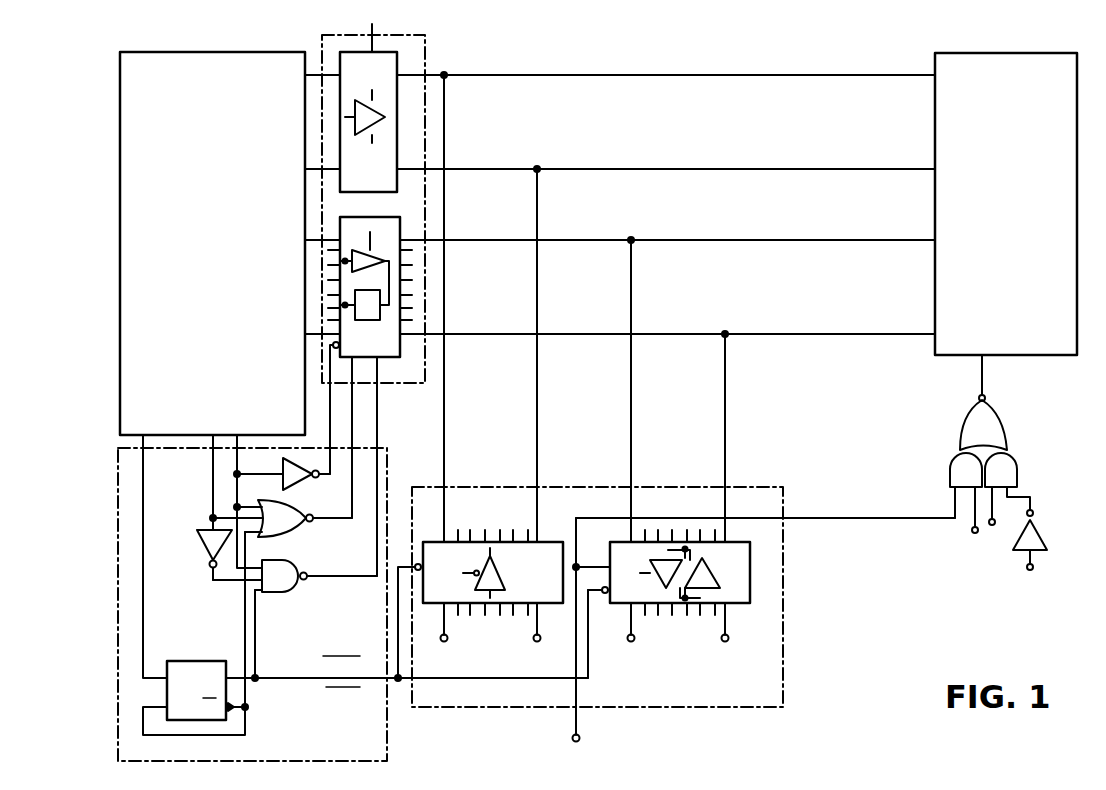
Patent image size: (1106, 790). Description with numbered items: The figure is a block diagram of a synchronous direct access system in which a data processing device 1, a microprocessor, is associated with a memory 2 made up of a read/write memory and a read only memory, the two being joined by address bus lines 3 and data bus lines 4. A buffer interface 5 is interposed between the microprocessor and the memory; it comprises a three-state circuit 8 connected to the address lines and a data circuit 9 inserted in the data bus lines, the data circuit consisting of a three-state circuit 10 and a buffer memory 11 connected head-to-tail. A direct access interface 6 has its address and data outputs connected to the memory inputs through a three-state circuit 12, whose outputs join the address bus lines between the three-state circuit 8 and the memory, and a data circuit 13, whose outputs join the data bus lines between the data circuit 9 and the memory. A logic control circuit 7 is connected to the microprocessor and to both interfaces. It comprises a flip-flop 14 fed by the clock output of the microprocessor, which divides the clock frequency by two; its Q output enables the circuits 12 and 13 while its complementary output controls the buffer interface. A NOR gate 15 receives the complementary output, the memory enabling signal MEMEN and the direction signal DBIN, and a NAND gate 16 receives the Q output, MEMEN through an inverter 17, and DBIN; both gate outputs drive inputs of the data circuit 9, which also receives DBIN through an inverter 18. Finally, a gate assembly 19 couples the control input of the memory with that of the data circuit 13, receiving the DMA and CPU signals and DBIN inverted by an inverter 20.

The data processing device 1 is at (230, 243).
The memory 2 is at (1006, 227).
The address bus lines 3 is at (677, 77).
The data bus lines 4 is at (667, 242).
The buffer interface 5 is at (423, 44).
The direct access interface 6 is at (770, 690).
The logic control circuit 7 is at (303, 744).
The three-state circuit 8 is at (385, 180).
The data circuit 9 is at (372, 300).
The three-state circuit 10 is at (362, 252).
The buffer memory 11 is at (360, 323).
The three-state circuit 12 is at (522, 590).
The data circuit 13 is at (740, 593).
The flip-flop 14 is at (180, 672).
The NOR gate 15 is at (290, 528).
The NAND gate 16 is at (280, 592).
The inverter 17 is at (205, 543).
The inverter 18 is at (300, 480).
The gate assembly 19 is at (1010, 445).
The inverter 20 is at (1040, 535).